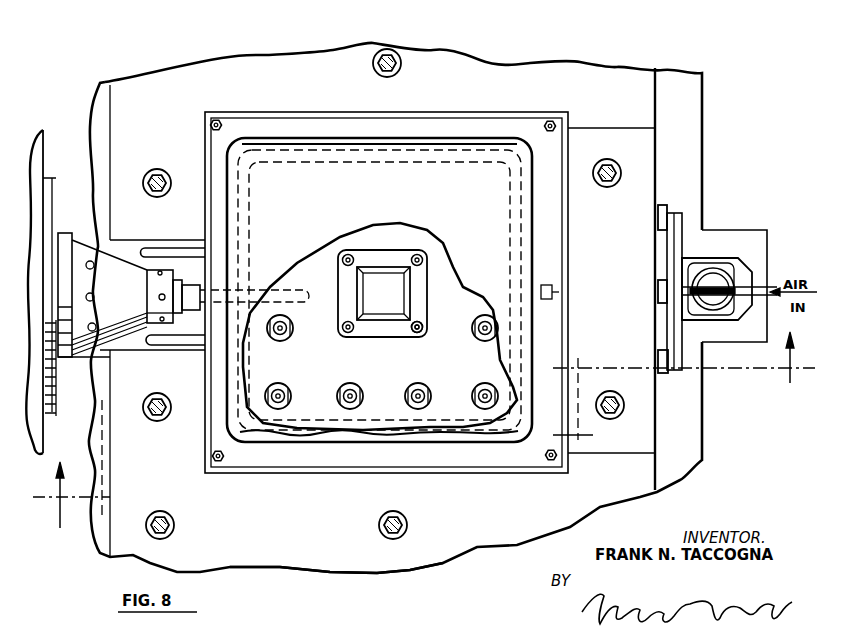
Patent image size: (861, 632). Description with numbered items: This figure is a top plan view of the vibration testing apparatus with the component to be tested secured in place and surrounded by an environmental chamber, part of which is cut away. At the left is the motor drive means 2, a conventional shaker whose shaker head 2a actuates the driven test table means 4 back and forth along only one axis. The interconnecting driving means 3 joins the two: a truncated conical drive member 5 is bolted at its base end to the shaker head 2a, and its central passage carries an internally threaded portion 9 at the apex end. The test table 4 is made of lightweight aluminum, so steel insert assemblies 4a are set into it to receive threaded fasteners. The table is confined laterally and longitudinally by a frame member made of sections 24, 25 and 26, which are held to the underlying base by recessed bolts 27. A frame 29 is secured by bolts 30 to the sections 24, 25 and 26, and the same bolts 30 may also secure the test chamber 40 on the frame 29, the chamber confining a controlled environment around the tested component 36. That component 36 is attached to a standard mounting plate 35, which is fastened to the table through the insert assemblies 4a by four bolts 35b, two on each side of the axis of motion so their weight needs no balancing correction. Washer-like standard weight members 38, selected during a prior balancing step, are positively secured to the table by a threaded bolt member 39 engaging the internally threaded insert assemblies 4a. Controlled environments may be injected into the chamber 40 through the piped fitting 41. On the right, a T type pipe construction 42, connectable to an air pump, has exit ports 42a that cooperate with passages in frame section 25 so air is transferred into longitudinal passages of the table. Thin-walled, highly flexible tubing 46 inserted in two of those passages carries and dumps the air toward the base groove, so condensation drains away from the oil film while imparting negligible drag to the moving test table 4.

The motor drive means 2 is at (40, 145).
The shaker head 2a is at (52, 178).
The interconnecting driving means 3 is at (125, 218).
The driven test table means 4 is at (389, 366).
The insert assemblies 4a is at (292, 327).
The truncated conical drive member 5 is at (72, 340).
The internally threaded portion 9 is at (68, 550).
The frame member section 24 is at (535, 92).
The frame member section 25 is at (640, 178).
The frame member section 26 is at (513, 518).
The recessed bolts 27 is at (157, 169).
The frame 29 is at (312, 112).
The bolts 30 is at (218, 120).
The mounting plate 35 is at (365, 258).
The bolts 35b is at (421, 326).
The tested component 36 is at (390, 298).
The standard weight members 38 is at (290, 399).
The threaded bolt member 39 is at (284, 392).
The test chamber 40 is at (393, 198).
The piped fitting 41 is at (560, 292).
The T type pipe construction 42 is at (700, 265).
The exit ports 42a is at (668, 210).
The flexible tubing 46 is at (172, 252).